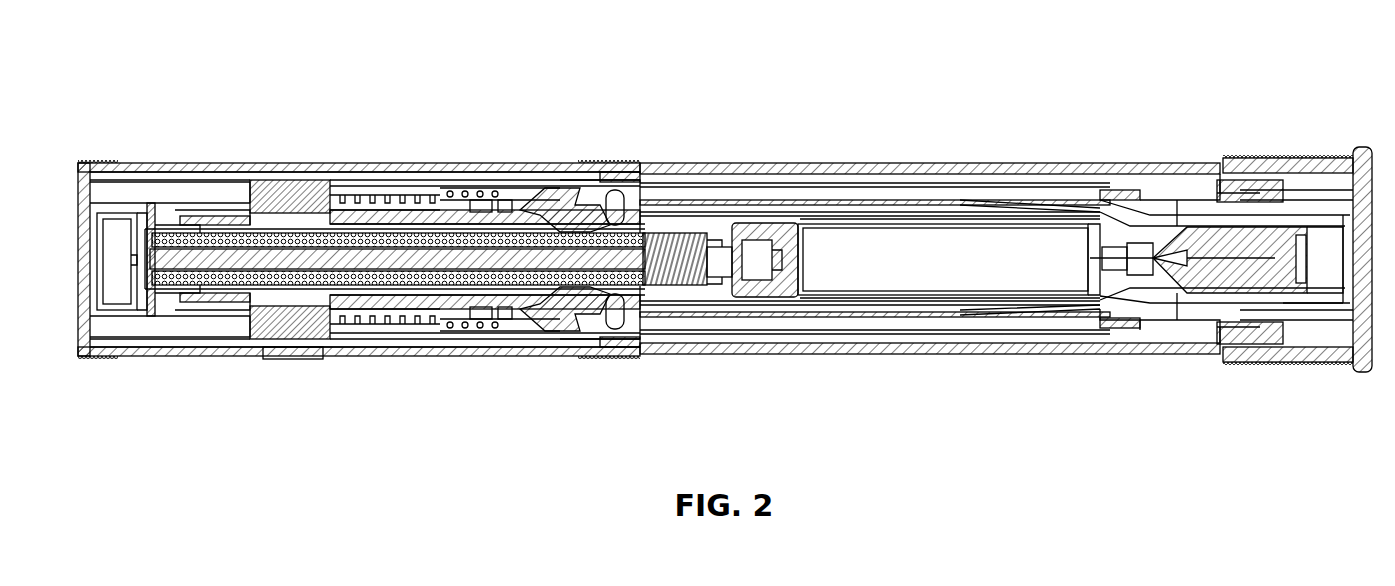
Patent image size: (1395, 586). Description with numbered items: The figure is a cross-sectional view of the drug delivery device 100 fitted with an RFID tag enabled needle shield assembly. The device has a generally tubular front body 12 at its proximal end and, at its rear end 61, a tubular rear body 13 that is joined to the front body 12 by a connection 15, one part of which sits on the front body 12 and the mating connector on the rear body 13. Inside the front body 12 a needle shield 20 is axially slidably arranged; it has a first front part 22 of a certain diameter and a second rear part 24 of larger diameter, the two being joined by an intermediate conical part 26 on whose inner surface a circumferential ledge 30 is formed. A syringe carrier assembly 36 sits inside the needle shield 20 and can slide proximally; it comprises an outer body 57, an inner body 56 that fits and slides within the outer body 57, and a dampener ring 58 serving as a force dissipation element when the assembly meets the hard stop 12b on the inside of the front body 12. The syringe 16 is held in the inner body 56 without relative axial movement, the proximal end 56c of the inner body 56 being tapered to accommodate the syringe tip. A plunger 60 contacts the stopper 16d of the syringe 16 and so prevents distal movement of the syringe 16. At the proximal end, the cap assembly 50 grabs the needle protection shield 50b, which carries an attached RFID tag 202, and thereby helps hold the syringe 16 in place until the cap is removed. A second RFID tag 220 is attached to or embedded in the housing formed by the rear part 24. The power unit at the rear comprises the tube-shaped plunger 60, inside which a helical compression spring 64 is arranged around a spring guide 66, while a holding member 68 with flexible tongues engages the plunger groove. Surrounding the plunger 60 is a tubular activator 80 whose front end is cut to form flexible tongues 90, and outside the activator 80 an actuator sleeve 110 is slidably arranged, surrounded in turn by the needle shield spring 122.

The drug delivery device 100 is at (653, 95).
The front body 12 is at (940, 177).
The hard stop 12b is at (1232, 190).
The rear body 13 is at (269, 178).
The connection 15 is at (428, 178).
The syringe 16 is at (866, 240).
The stopper 16d is at (758, 265).
The needle shield 20 is at (745, 194).
The front part 22 is at (1262, 335).
The rear part 24 is at (840, 315).
The conical part 26 is at (1185, 348).
The circumferential ledge 30 is at (1195, 232).
The syringe carrier assembly 36 is at (938, 320).
The cap assembly 50 is at (1305, 160).
The needle protection shield 50b is at (1298, 345).
The inner body 56 is at (1032, 210).
The proximal end of inner body 56c is at (1108, 330).
The outer body 57 is at (668, 345).
The dampener ring 58 is at (703, 342).
The plunger 60 is at (380, 290).
The rear end 61 is at (95, 394).
The helical compression spring 64 is at (183, 232).
The spring guide 66 is at (168, 295).
The holding member 68 is at (588, 325).
The activator 80 is at (492, 335).
The flexible tongues 90 is at (560, 215).
The actuator sleeve 110 is at (495, 195).
The needle shield spring 122 is at (347, 205).
The RFID tag 202 is at (1320, 325).
The second RFID tag 220 is at (296, 358).